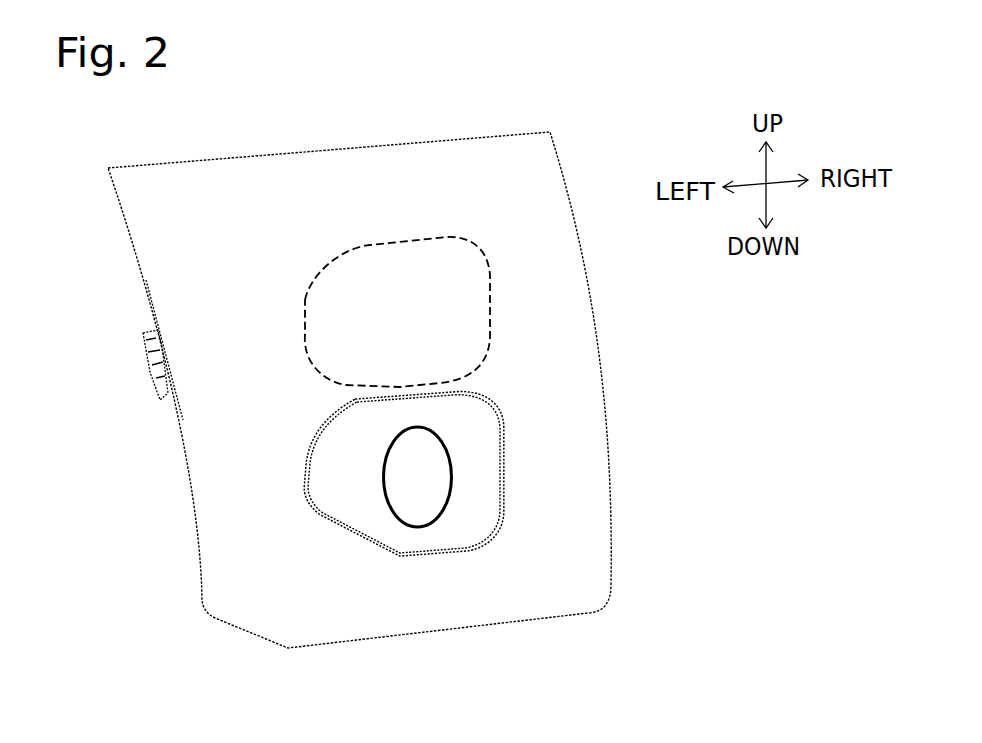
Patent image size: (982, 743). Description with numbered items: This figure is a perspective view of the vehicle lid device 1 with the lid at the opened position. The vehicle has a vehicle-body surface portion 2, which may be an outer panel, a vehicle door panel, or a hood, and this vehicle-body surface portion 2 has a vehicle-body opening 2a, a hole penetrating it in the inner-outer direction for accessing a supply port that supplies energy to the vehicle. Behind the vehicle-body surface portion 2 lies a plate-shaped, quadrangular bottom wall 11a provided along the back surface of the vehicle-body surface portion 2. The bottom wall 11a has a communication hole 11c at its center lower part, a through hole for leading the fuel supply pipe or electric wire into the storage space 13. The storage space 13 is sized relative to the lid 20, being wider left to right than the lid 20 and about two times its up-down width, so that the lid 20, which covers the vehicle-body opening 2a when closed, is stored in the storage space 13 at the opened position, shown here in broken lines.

The vehicle lid device 1 is at (300, 346).
The vehicle-body surface portion 2 is at (565, 309).
The vehicle-body opening 2a is at (457, 395).
The bottom wall 11a is at (400, 538).
The communication hole 11c is at (443, 450).
The storage space 13 is at (345, 515).
The lid 20 is at (313, 282).